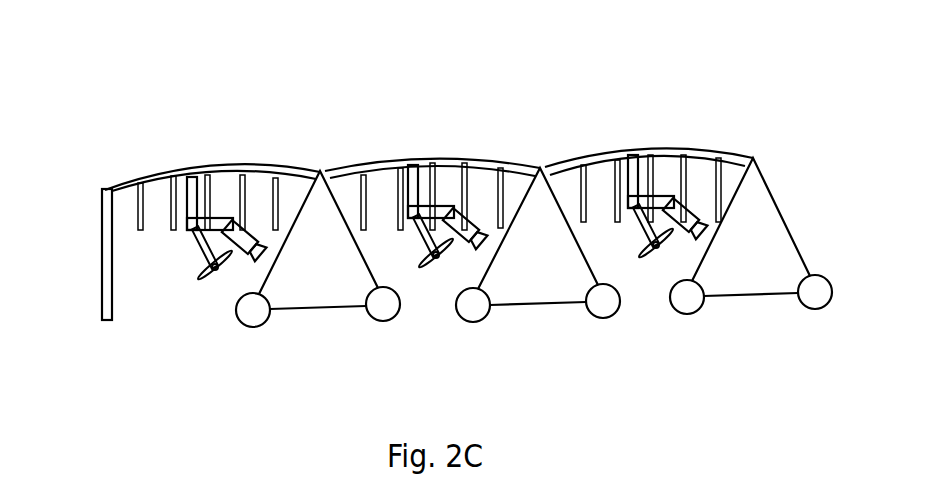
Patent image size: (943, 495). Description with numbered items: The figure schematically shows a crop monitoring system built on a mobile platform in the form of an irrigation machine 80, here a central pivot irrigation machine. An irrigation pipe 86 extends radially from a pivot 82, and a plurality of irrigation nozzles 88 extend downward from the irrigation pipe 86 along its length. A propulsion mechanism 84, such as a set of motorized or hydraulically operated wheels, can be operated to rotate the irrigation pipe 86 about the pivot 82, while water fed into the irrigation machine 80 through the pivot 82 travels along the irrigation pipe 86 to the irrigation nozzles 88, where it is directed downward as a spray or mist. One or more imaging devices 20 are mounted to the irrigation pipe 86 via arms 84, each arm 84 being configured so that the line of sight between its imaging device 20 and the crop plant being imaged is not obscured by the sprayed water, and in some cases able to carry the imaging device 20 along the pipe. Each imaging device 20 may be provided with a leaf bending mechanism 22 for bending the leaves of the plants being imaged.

The irrigation machine 80 is at (223, 118).
The pivot 82 is at (102, 258).
The propulsion mechanism 84 is at (188, 208).
The irrigation pipe 86 is at (458, 162).
The irrigation nozzles 88 is at (585, 222).
The imaging device 20 is at (245, 234).
The leaf bending mechanism 22 is at (203, 250).